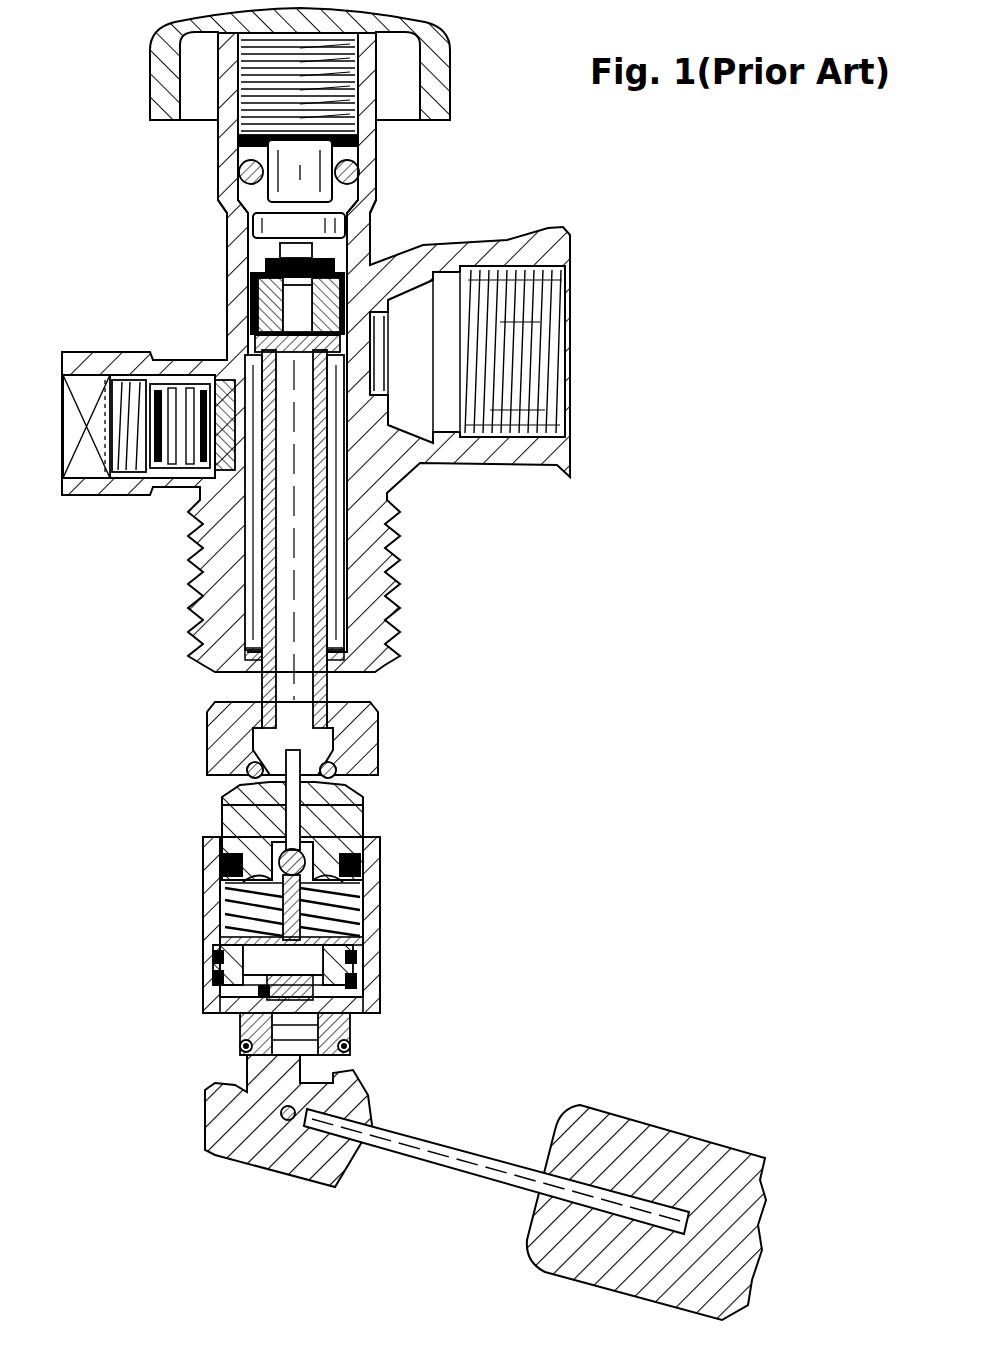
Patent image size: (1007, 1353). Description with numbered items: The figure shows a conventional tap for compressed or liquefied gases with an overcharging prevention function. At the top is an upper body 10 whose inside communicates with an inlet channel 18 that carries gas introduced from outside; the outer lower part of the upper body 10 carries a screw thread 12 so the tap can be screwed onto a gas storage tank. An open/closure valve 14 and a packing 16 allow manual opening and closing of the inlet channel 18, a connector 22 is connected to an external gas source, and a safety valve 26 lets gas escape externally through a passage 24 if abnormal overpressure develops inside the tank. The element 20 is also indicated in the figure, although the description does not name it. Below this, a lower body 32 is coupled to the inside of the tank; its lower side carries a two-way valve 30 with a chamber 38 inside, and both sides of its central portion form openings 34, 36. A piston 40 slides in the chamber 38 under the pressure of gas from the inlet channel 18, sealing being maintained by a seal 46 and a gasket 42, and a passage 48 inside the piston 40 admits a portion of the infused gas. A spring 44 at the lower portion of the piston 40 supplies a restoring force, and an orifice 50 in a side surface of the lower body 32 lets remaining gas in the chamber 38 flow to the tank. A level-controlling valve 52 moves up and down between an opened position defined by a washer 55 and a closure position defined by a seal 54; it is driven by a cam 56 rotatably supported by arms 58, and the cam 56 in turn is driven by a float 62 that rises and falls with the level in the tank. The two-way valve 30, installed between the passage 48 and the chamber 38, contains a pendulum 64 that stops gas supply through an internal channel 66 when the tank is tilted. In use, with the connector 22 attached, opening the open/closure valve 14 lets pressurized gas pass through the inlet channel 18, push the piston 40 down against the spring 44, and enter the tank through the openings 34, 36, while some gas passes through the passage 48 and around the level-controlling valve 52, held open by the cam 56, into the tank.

The upper body 10 is at (408, 170).
The screw thread 12 is at (395, 553).
The open/closure valve 14 is at (246, 303).
The packing 16 is at (248, 345).
The inlet channel 18 is at (327, 688).
The bonnet 20 is at (373, 265).
The connector 22 is at (540, 248).
The passage 24 is at (247, 520).
The safety valve 26 is at (92, 503).
The two-way valve 30 is at (178, 868).
The lower body 32 is at (375, 875).
The opening 34 is at (230, 832).
The opening 36 is at (370, 827).
The chamber 38 is at (370, 907).
The piston 40 is at (355, 798).
The gasket 42 is at (232, 880).
The spring 44 is at (235, 918).
The seal 46 is at (360, 758).
The passage 48 is at (290, 810).
The orifice 50 is at (370, 936).
The level-controlling valve 52 is at (345, 1032).
The seal 54 is at (365, 987).
The washer 55 is at (235, 987).
The cam 56 is at (250, 1117).
The arms 58 is at (330, 1065).
The float 62 is at (562, 1127).
The pendulum 64 is at (240, 947).
The channel 66 is at (380, 893).